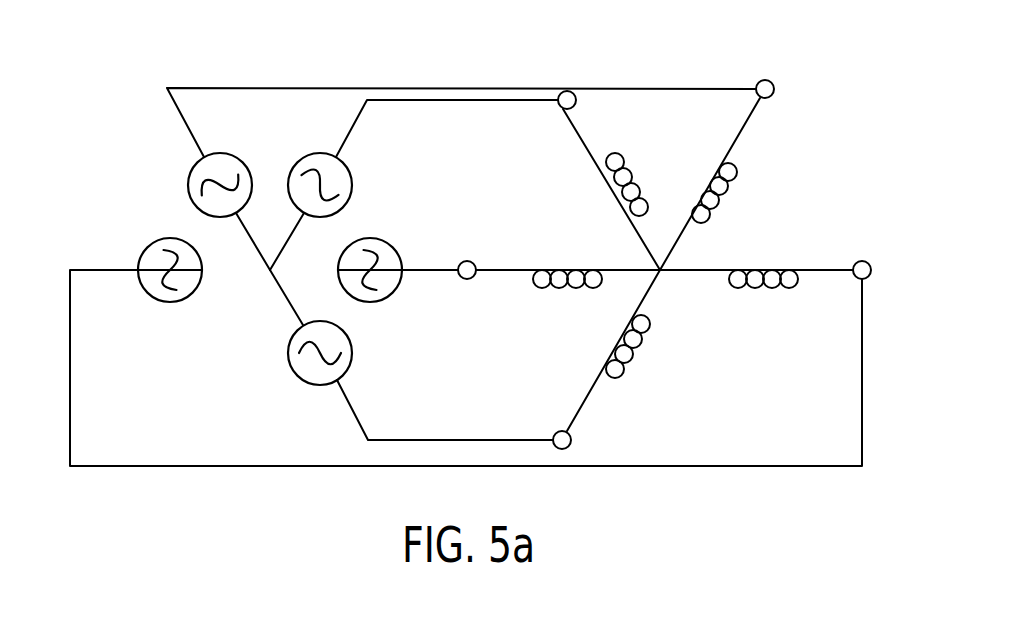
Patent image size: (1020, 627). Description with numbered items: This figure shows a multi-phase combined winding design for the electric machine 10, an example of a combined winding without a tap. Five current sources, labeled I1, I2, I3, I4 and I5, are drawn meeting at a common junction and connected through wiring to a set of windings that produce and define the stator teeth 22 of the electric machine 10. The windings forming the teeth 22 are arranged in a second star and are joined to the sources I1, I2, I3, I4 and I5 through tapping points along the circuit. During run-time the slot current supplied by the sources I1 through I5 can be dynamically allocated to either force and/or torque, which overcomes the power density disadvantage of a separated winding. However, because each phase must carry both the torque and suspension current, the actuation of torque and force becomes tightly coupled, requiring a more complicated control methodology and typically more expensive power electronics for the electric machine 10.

The electric machine 10 is at (737, 52).
The stator teeth 22 is at (731, 185).
The current source I1 is at (313, 369).
The current source I2 is at (381, 282).
The current source I3 is at (330, 179).
The current source I4 is at (220, 166).
The current source I5 is at (163, 254).